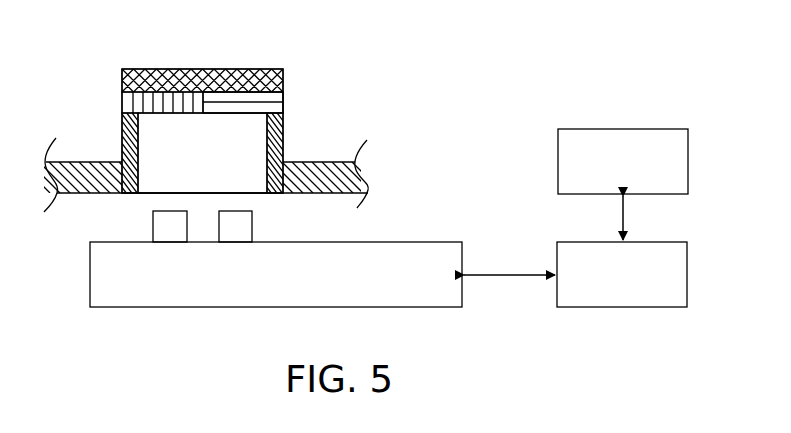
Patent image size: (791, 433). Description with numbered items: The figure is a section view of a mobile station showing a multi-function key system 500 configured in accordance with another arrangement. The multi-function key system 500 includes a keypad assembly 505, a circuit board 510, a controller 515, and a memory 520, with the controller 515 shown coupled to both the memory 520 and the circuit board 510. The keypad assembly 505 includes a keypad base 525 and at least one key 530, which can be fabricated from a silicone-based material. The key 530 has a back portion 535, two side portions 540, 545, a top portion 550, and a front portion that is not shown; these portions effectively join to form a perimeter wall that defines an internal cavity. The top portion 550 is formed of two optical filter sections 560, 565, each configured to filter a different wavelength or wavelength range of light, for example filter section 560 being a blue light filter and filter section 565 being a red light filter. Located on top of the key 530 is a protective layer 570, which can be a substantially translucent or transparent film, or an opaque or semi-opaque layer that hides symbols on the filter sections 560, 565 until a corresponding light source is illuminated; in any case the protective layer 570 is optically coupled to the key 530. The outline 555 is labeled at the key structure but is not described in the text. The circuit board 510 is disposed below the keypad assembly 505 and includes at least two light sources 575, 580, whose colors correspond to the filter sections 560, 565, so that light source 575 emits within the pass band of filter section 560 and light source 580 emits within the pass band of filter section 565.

The multi-function key system 500 is at (616, 57).
The keypad assembly 505 is at (403, 117).
The circuit board 510 is at (276, 274).
The controller 515 is at (622, 274).
The memory 520 is at (623, 161).
The keypad base 525 is at (86, 195).
The key 530 is at (122, 144).
The back portion 535 is at (245, 167).
The side portion 540 is at (137, 128).
The side portion 545 is at (275, 130).
The top portion 550 is at (283, 103).
The housing outline 555 is at (122, 88).
The filter section 560 is at (148, 102).
The filter section 565 is at (243, 102).
The protective layer 570 is at (248, 70).
The light source 575 is at (153, 213).
The light source 580 is at (252, 227).